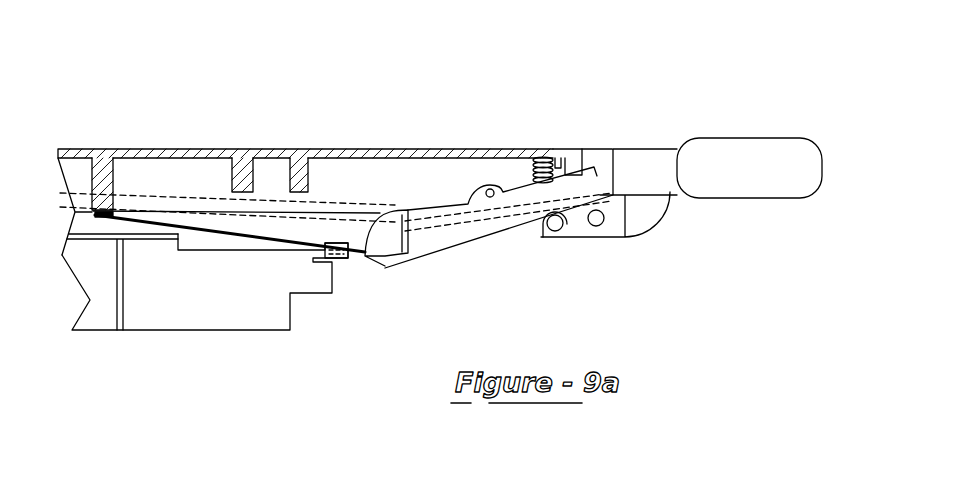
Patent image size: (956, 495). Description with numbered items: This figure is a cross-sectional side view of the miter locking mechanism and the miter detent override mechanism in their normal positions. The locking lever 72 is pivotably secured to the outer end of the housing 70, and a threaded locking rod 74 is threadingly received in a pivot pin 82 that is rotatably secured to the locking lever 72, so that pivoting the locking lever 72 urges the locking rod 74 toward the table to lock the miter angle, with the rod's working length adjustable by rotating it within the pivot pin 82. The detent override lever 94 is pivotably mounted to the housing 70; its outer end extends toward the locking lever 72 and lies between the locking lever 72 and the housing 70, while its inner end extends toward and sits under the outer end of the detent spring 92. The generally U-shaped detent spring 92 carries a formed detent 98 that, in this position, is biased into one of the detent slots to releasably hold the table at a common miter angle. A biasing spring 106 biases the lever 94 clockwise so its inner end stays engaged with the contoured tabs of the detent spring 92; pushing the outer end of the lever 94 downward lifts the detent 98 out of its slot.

The housing 70 is at (182, 150).
The locking lever 72 is at (730, 172).
The threaded locking rod 74 is at (536, 228).
The pivot pin 82 is at (562, 228).
The detent spring 92 is at (237, 228).
The detent override lever 94 is at (438, 238).
The detent 98 is at (346, 262).
The biasing spring 106 is at (548, 158).